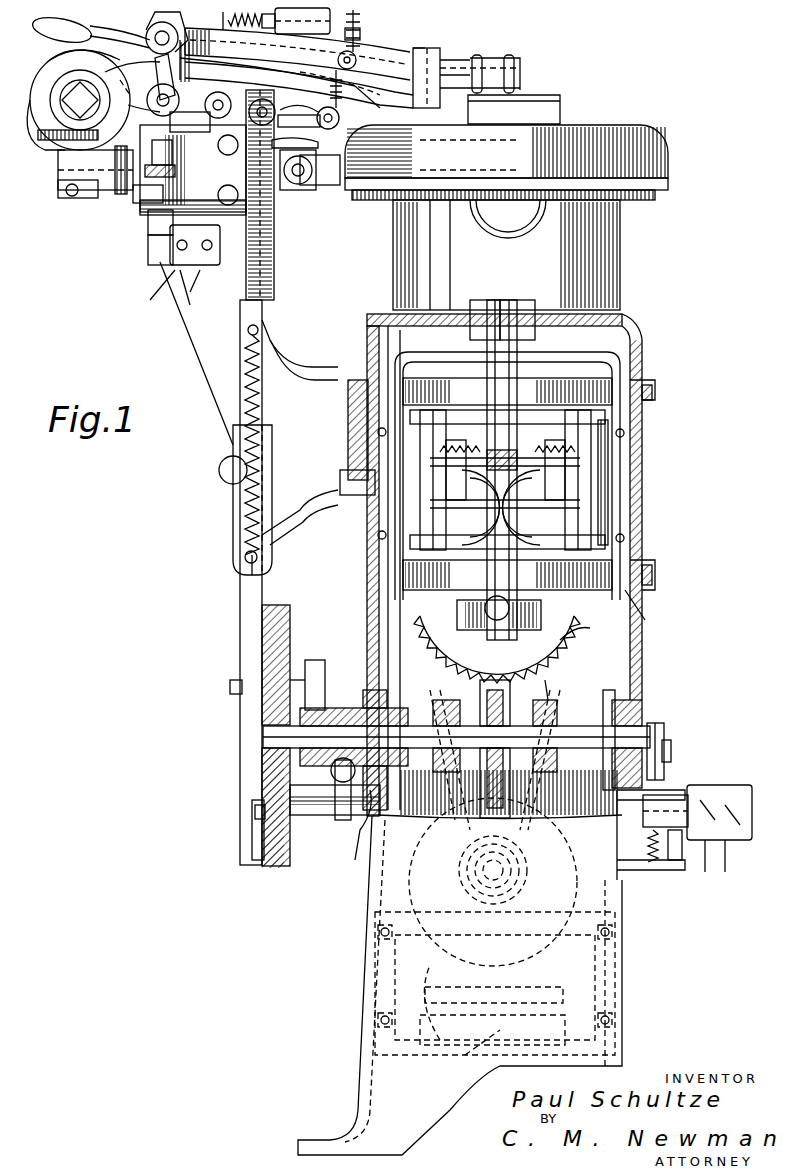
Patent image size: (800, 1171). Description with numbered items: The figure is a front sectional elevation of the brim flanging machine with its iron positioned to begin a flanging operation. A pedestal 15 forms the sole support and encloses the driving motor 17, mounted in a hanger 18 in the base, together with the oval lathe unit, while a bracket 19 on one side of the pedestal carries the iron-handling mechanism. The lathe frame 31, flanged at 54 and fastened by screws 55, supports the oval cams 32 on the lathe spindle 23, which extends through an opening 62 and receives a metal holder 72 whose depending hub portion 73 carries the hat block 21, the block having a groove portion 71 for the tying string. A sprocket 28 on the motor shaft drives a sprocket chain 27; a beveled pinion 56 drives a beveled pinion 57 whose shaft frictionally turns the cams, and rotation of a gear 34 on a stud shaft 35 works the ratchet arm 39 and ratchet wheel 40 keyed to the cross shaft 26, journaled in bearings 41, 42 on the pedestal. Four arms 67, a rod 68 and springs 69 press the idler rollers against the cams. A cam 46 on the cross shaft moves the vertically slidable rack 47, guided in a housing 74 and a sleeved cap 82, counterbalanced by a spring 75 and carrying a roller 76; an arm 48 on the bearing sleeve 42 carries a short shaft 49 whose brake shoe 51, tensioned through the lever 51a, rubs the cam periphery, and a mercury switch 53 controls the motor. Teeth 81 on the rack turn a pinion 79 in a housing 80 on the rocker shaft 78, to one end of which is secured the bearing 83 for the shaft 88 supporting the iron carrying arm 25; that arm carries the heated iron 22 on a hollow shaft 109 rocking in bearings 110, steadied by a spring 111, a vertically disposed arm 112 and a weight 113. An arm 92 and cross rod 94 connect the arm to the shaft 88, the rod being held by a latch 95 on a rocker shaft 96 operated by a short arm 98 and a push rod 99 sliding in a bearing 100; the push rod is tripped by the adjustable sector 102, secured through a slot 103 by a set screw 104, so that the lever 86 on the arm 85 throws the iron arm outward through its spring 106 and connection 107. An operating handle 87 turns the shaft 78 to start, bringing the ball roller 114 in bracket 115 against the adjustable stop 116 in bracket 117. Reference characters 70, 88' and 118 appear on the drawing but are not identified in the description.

The pedestal 15 is at (635, 364).
The driving motor 17 is at (465, 985).
The hanger 18 is at (467, 1058).
The bracket 19 is at (200, 360).
The hat block 21 is at (506, 157).
The iron 22 is at (514, 109).
The lathe spindle 23 is at (507, 476).
The iron carrying arm 25 is at (299, 70).
The cross shaft 26 is at (664, 728).
The sprocket chain 27 is at (552, 700).
The sprocket 28 is at (515, 890).
The lathe frame 31 is at (598, 440).
The oval cams 32 is at (507, 486).
The gear 34 is at (576, 639).
The stud shaft 35 is at (499, 626).
The ratchet arm 39 is at (497, 649).
The ratchet wheel 40 is at (492, 795).
The bearing 41 is at (643, 705).
The bearing sleeve 42 is at (352, 705).
The cam 46 is at (262, 765).
The slidable rack 47 is at (265, 308).
The arm 48 is at (310, 690).
The short shaft 49 is at (252, 810).
The brake shoe 51 is at (671, 750).
The lever 51a is at (351, 839).
The mercury switch 53 is at (715, 800).
The flange 54 is at (620, 565).
The screws 55 is at (624, 430).
The beveled pinion 56 is at (529, 507).
The beveled pinion 57 is at (474, 507).
The opening 62 is at (470, 304).
The arms 67 is at (592, 455).
The rod 68 is at (592, 470).
The springs 69 is at (455, 462).
The gear 70 is at (520, 460).
The groove portion 71 is at (657, 193).
The metal holder 72 is at (623, 268).
The depending hub portion 73 is at (528, 304).
The housing 74 is at (272, 445).
The spring 75 is at (262, 397).
The roller 76 is at (292, 650).
The rocker shaft 78 is at (58, 175).
The pinion 79 is at (276, 200).
The housing 80 is at (240, 258).
The teeth 81 is at (274, 238).
The sleeved cap 82 is at (265, 210).
The bearing 83 is at (60, 60).
The arm 85 is at (318, 160).
The lever 86 is at (299, 114).
The operating handle 87 is at (318, 145).
The shaft 88 is at (76, 105).
The hub 88' is at (41, 83).
The arm 92 is at (150, 44).
The cross rod 94 is at (150, 97).
The latch 95 is at (222, 112).
The rocker shaft 96 is at (115, 62).
The short arm 98 is at (168, 22).
The push rod 99 is at (223, 22).
The bearing 100 is at (260, 72).
The adjustable sector 102 is at (201, 293).
The slot 103 is at (208, 285).
The set screw 104 is at (154, 293).
The spring 106 is at (362, 36).
The connection 107 is at (360, 60).
The hollow shaft 109 is at (342, 90).
The bearings 110 is at (340, 118).
The spring 111 is at (297, 54).
The vertically disposed arm 112 is at (290, 30).
The weight 113 is at (360, 18).
The ball roller 114 is at (160, 180).
The bracket 115 is at (130, 195).
The adjustable stop 116 is at (150, 225).
The bracket 117 is at (155, 240).
The handle 118 is at (62, 28).